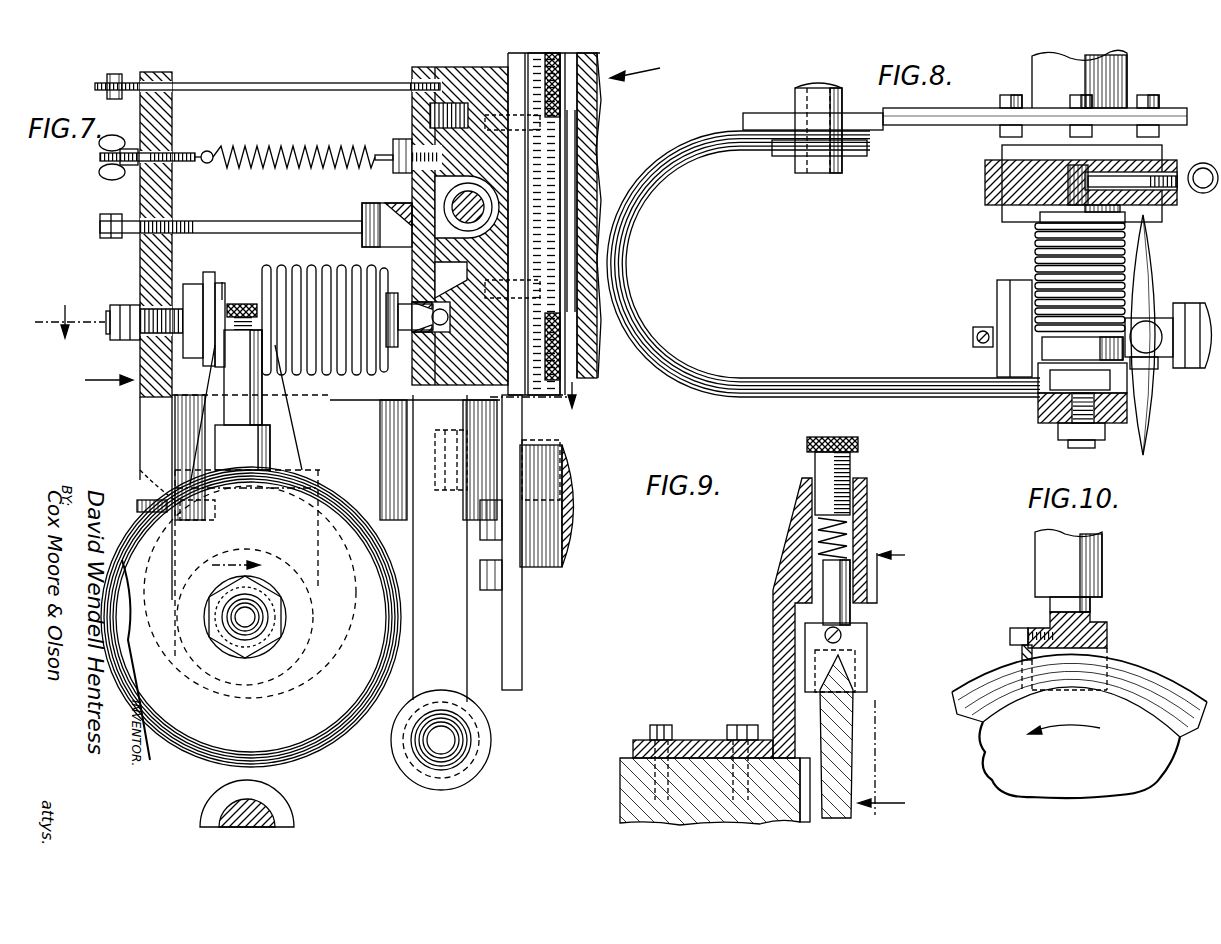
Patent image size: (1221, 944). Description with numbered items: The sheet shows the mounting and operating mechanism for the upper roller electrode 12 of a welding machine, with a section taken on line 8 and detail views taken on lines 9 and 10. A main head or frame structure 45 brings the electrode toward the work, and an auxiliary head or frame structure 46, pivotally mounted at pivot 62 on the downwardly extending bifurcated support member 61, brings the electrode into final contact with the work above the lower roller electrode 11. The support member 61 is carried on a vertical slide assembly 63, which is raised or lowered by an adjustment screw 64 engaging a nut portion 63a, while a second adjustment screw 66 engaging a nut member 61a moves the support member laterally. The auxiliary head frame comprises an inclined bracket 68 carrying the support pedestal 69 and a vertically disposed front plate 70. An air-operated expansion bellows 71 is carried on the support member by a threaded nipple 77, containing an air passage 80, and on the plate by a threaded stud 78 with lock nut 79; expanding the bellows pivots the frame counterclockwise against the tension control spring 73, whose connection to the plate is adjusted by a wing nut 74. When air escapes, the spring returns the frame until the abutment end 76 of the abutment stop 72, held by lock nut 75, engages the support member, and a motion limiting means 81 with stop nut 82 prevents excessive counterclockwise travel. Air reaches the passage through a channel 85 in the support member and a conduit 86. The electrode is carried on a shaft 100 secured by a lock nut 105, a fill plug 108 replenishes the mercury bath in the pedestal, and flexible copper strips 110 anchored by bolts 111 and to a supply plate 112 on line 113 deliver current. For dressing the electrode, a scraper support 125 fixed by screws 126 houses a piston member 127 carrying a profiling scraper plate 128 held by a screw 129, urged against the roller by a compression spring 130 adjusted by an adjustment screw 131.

In FIG. 7, the section line 8- 8 is at (312, 346).
In FIG. 7, the section line 9- 9 is at (230, 428).
In FIG. 9, the section line 10- 10 is at (900, 681).
In FIG. 7, the lower welding arbor or roller electrode 11 is at (294, 812).
In FIG. 7, the upper roller electrode 12 is at (343, 482).
In FIG. 8, the upper roller electrode 12 is at (1152, 272).
In FIG. 9, the upper roller electrode 12 is at (840, 785).
In FIG. 10, the upper roller electrode 12 is at (1130, 720).
In FIG. 7, the main head or frame structure 45 is at (647, 69).
In FIG. 7, the auxiliary head or frame structure 46 is at (89, 379).
In FIG. 7, the bifurcated support member 61 is at (466, 686).
In FIG. 8, the bifurcated support member 61 is at (1000, 192).
In FIG. 7, the nut member 61a is at (440, 190).
In FIG. 7, the pivot 62 is at (462, 748).
In FIG. 7, the vertical slide assembly 63 is at (440, 70).
In FIG. 7, the nut portion 63a is at (598, 182).
In FIG. 7, the adjustment screw 64 is at (583, 90).
In FIG. 7, the adjustment screw 66 is at (392, 226).
In FIG. 7, the inclined bracket 68 is at (300, 690).
In FIG. 7, the support pedestal 69 is at (300, 596).
In FIG. 8, the support pedestal 69 is at (1018, 293).
In FIG. 9, the support pedestal 69 is at (622, 798).
In FIG. 7, the front plate 70 is at (140, 196).
In FIG. 8, the front plate 70 is at (1046, 420).
In FIG. 7, the expansion bellows or power unit 71 is at (256, 268).
In FIG. 8, the expansion bellows or power unit 71 is at (1037, 250).
In FIG. 7, the abutment stop 72 is at (237, 220).
In FIG. 7, the control spring 73 is at (278, 150).
In FIG. 7, the wing nut 74 is at (100, 165).
In FIG. 7, the lock nut 75 is at (100, 226).
In FIG. 7, the abutment end 76 is at (362, 212).
In FIG. 7, the threaded nipple 77 is at (398, 368).
In FIG. 7, the threaded stud 78 is at (162, 318).
In FIG. 7, the lock nut 79 is at (129, 305).
In FIG. 7, the air passage 80 is at (428, 300).
In FIG. 7, the motion limiting means 81 is at (278, 84).
In FIG. 7, the adjustable stop nut 82 is at (107, 78).
In FIG. 7, the channel 85 is at (447, 322).
In FIG. 8, the channel 85 is at (1130, 183).
In FIG. 8, the conduit 86 is at (1198, 192).
In FIG. 7, the electrode support shaft or axle 100 is at (238, 642).
In FIG. 7, the lock nut 105 is at (280, 627).
In FIG. 8, the fill plug 108 is at (975, 328).
In FIG. 7, the copper strips 110 is at (175, 418).
In FIG. 8, the copper strips 110 is at (795, 382).
In FIG. 7, the bolts 111 is at (160, 472).
In FIG. 7, the supply plate 112 is at (522, 655).
In FIG. 8, the supply plate 112 is at (932, 126).
In FIG. 7, the line 113 is at (578, 545).
In FIG. 8, the line 113 is at (1110, 75).
In FIG. 7, the scraper support 125 is at (262, 392).
In FIG. 9, the scraper support 125 is at (868, 540).
In FIG. 10, the scraper support 125 is at (1080, 560).
In FIG. 9, the screws 126 is at (742, 728).
In FIG. 7, the piston member 127 is at (272, 452).
In FIG. 9, the piston member 127 is at (848, 600).
In FIG. 10, the piston member 127 is at (1098, 625).
In FIG. 7, the profiling scraper plate 128 is at (228, 486).
In FIG. 9, the profiling scraper plate 128 is at (812, 665).
In FIG. 10, the profiling scraper plate 128 is at (1022, 652).
In FIG. 8, the screw 129 is at (1150, 366).
In FIG. 9, the screw 129 is at (822, 637).
In FIG. 10, the screw 129 is at (1010, 636).
In FIG. 9, the compression spring 130 is at (866, 520).
In FIG. 8, the adjustment screw 131 is at (1150, 332).
In FIG. 9, the adjustment screw 131 is at (860, 445).